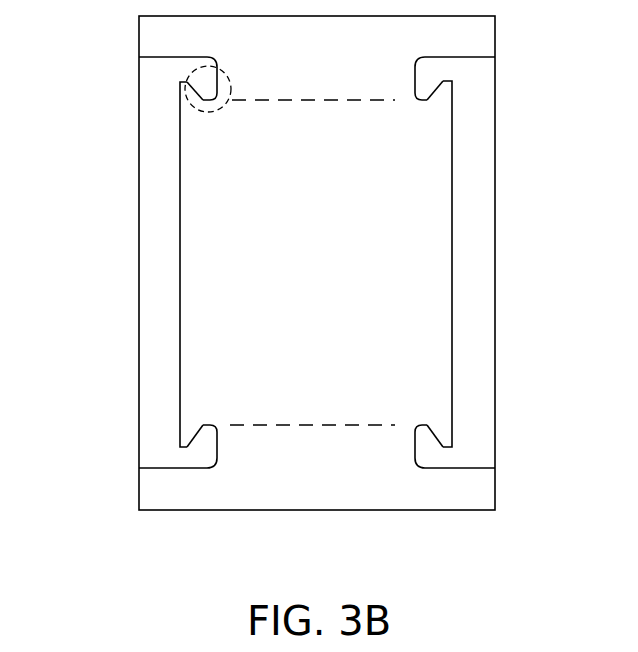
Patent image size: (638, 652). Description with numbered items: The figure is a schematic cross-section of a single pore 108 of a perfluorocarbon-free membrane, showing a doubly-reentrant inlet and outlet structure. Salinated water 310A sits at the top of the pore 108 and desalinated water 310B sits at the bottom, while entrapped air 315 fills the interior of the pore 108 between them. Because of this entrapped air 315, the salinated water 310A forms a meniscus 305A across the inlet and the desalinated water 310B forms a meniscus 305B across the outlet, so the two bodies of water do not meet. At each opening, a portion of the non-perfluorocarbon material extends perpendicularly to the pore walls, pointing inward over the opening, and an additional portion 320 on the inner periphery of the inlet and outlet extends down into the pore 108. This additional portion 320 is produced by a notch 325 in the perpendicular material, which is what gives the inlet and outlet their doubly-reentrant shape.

The pore 108 is at (342, 270).
The salinated water 310A is at (350, 63).
The desalinated water 310B is at (345, 488).
The entrapped air 315 is at (402, 240).
The additional portion 320 is at (211, 112).
The notch 325 is at (185, 86).
The meniscus 305A is at (383, 102).
The meniscus 305B is at (383, 423).